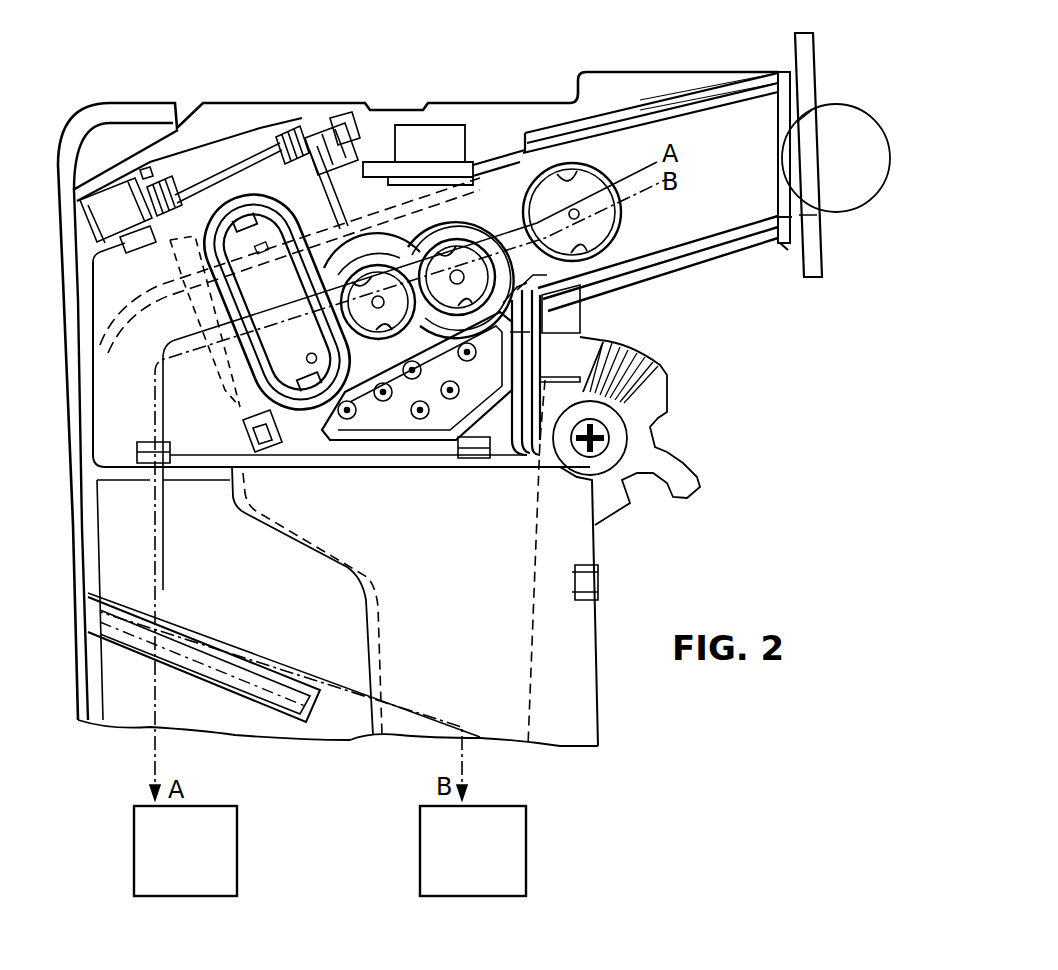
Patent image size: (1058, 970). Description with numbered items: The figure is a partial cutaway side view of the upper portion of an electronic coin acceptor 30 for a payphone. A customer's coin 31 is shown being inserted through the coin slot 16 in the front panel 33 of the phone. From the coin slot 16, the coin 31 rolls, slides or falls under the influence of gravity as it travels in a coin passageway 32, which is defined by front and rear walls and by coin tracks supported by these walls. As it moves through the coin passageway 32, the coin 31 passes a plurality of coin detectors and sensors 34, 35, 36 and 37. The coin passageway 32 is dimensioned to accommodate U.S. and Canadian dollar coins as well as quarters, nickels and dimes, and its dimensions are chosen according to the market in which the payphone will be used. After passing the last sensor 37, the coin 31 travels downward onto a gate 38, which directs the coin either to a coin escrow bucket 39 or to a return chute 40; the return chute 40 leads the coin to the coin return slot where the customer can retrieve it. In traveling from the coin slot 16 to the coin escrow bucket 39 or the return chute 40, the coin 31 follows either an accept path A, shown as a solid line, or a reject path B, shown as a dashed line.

The electronic coin acceptor 30 is at (538, 84).
The coin 31 is at (848, 110).
The coin passageway 32 is at (730, 118).
The front panel 33 is at (808, 50).
The coin slot 16 is at (810, 99).
The coin detector and sensor 34 is at (590, 176).
The coin detector and sensor 35 is at (455, 232).
The coin detector and sensor 36 is at (380, 262).
The last sensor 37 is at (255, 212).
The gate 38 is at (118, 625).
The coin escrow bucket 39 is at (240, 835).
The return chute 40 is at (530, 832).